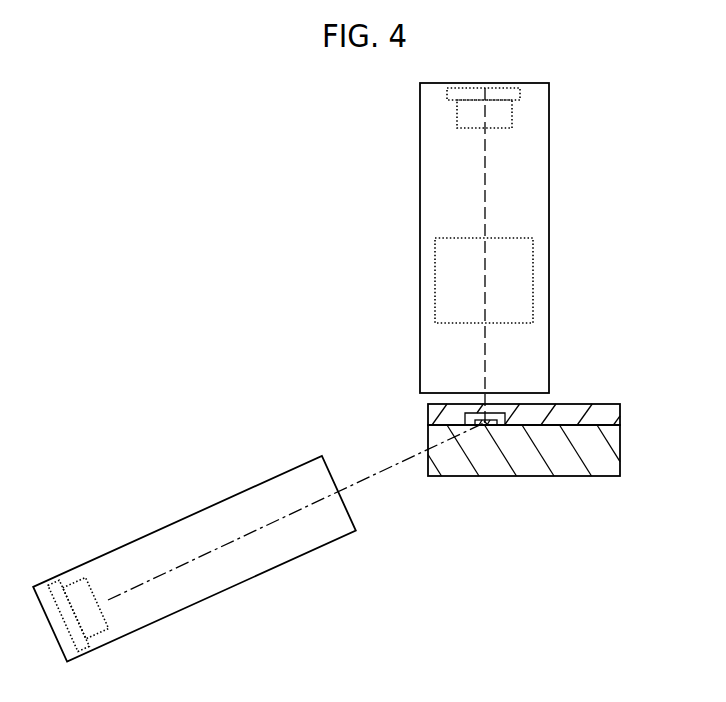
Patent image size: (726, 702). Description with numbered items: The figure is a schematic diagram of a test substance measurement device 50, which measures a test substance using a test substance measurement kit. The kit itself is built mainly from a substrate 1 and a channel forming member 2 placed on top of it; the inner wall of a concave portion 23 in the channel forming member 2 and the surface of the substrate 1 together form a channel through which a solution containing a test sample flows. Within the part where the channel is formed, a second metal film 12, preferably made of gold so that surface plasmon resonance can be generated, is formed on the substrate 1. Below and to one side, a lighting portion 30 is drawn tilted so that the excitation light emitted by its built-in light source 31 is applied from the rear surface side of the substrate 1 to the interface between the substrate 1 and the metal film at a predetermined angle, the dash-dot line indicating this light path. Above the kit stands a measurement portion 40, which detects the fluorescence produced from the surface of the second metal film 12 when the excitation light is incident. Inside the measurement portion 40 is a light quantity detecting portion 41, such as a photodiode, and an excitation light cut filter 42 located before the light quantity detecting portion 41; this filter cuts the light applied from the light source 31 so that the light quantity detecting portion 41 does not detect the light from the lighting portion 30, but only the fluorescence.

The substrate 1 is at (613, 467).
The channel forming member 2 is at (613, 408).
The second metal film 12 is at (486, 426).
The concave portion 23 is at (497, 424).
The lighting portion 30 is at (290, 480).
The light source 31 is at (72, 590).
The measurement portion 40 is at (549, 213).
The light quantity detecting portion 41 is at (520, 96).
The excitation light cut filter 42 is at (528, 283).
The test substance measurement device 50 is at (273, 280).